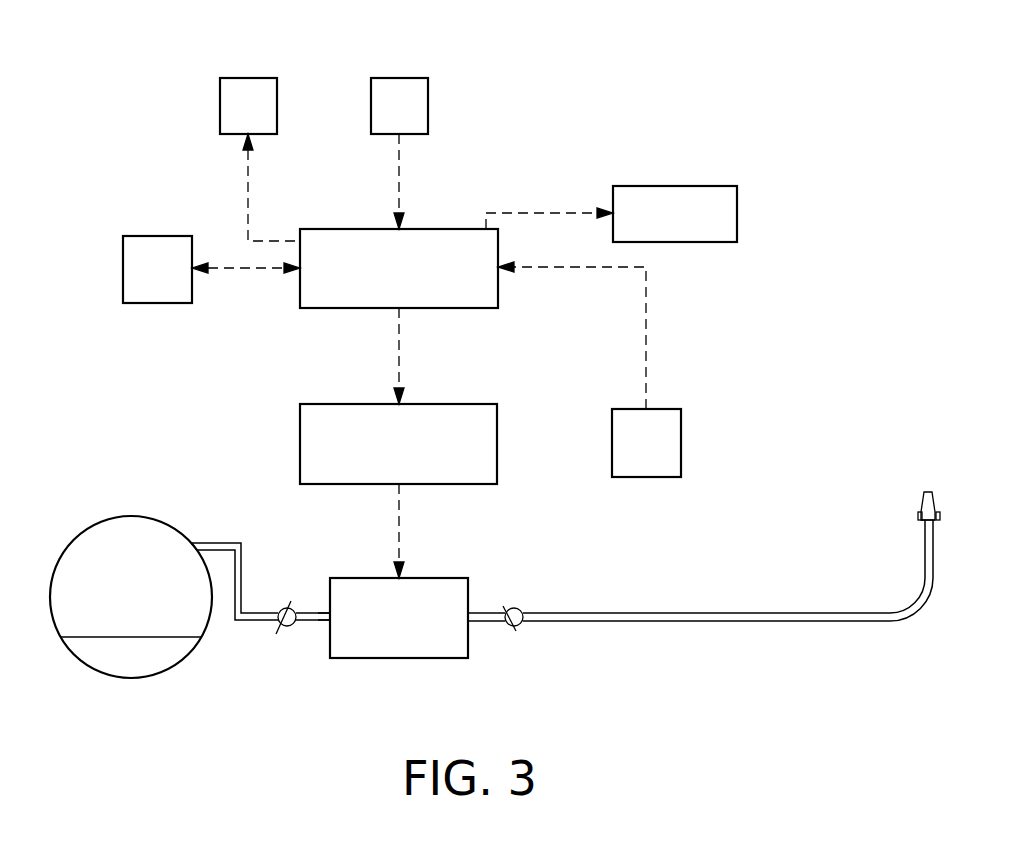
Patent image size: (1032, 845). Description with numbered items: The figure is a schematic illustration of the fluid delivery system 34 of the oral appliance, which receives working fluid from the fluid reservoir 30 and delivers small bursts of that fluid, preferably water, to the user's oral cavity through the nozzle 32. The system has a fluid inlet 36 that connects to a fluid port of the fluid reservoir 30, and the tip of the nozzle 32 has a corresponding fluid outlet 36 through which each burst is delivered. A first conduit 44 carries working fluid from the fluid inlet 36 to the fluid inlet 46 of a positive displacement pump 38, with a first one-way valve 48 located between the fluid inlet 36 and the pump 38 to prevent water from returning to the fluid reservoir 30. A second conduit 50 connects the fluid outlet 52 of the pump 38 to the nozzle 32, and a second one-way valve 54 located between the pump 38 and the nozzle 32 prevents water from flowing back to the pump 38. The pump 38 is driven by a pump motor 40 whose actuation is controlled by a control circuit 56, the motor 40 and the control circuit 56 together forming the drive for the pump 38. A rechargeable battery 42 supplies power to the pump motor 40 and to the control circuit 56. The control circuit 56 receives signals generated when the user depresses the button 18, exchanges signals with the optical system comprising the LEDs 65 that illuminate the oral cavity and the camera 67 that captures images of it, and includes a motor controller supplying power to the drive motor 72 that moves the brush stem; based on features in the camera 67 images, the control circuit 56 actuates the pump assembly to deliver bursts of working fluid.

The button 18 is at (399, 78).
The fluid reservoir 30 is at (93, 545).
The nozzle 32 is at (921, 500).
The fluid delivery system 34 is at (578, 664).
The fluid inlet / fluid outlet 36 is at (192, 543).
The positive displacement pump 38 is at (399, 658).
The pump motor 40 is at (345, 404).
The battery 42 is at (681, 443).
The first conduit 44 is at (243, 553).
The fluid inlet of the pump 46 is at (325, 623).
The first one-way valve 48 is at (280, 626).
The second conduit 50 is at (683, 612).
The fluid outlet of the pump 52 is at (470, 623).
The second one-way valve 54 is at (508, 607).
The control circuit 56 is at (345, 229).
The LEDs 65 is at (248, 78).
The camera 67 is at (158, 236).
The drive motor 72 is at (680, 186).